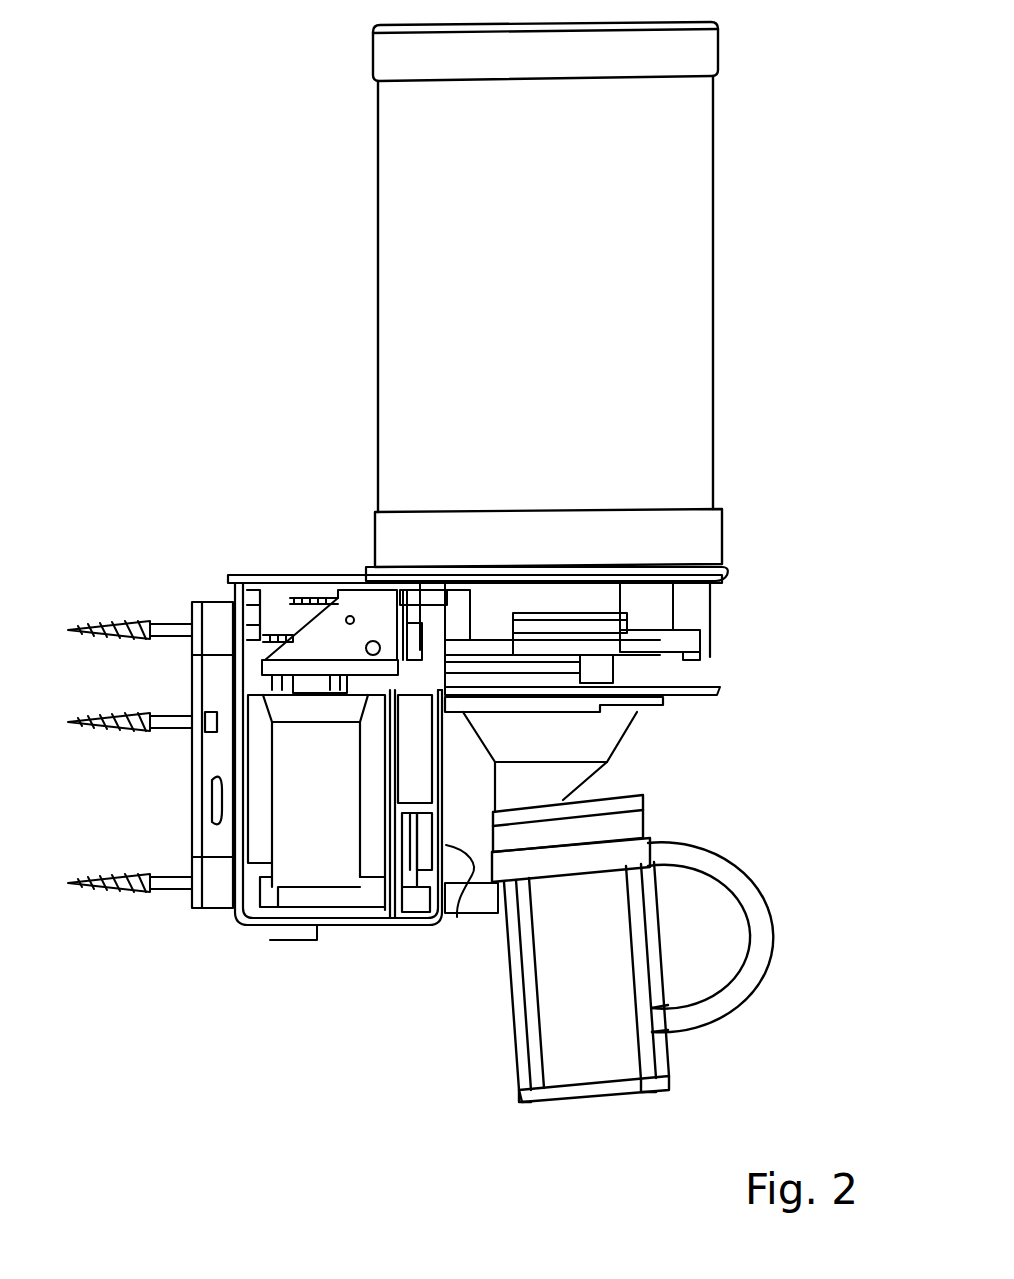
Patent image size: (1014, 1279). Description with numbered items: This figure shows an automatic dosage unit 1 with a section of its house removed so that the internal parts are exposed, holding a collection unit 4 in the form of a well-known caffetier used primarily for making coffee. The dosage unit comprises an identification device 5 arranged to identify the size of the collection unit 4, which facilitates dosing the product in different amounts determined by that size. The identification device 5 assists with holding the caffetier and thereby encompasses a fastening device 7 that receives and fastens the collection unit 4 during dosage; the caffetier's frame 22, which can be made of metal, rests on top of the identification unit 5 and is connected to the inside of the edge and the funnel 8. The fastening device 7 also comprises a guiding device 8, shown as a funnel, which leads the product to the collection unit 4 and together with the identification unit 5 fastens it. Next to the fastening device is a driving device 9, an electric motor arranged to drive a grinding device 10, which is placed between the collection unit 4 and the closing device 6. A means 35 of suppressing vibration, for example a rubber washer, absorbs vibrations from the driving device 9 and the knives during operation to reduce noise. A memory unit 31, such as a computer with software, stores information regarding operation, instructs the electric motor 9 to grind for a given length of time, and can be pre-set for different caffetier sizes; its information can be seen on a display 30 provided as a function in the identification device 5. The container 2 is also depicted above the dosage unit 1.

The dosage unit 1 is at (257, 180).
The container 2 is at (703, 262).
The collection unit 4 is at (737, 883).
The identification device 5 is at (480, 905).
The closing device 6 is at (730, 572).
The fastening device 7 is at (722, 776).
The guiding device 8 is at (608, 735).
The driving device 9 is at (317, 862).
The grinding device 10 is at (556, 638).
The frame 22 is at (523, 937).
The display 30 is at (458, 917).
The memory unit 31 is at (412, 760).
The means of suppressing vibration 35 is at (212, 617).